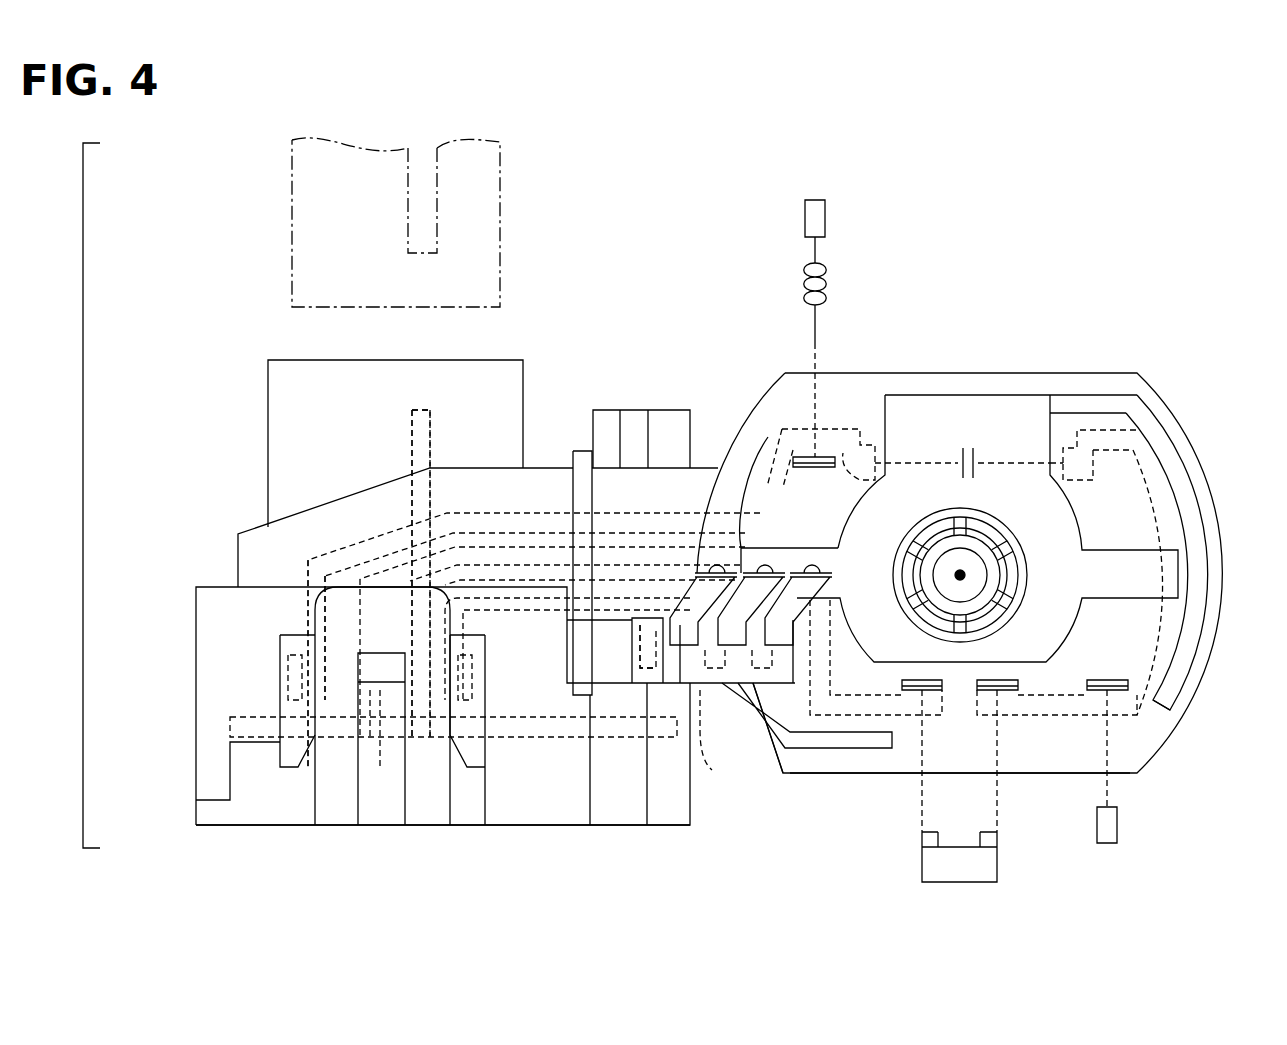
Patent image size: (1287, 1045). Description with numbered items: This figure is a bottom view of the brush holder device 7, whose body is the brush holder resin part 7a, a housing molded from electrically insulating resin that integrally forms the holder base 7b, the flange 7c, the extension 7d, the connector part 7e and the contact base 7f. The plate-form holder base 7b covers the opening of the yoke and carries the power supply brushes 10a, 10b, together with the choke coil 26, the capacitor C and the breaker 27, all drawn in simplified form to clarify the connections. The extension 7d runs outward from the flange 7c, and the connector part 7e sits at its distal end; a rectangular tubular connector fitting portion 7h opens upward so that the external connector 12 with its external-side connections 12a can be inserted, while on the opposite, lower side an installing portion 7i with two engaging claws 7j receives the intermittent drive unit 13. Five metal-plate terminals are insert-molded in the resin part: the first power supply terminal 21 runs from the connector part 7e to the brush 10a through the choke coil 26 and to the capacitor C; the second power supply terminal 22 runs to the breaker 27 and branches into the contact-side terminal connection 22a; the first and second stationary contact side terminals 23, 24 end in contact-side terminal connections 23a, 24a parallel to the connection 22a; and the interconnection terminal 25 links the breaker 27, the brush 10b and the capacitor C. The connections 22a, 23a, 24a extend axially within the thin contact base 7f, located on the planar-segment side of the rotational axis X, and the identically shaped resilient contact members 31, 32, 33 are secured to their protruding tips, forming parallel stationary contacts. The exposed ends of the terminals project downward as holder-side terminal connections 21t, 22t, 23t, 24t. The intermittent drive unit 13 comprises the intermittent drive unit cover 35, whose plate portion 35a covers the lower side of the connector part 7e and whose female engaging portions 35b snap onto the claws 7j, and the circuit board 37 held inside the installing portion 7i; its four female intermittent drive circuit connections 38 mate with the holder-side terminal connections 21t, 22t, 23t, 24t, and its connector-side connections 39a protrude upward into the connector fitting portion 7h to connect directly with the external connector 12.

The brush holder device 7 is at (1176, 337).
The brush holder resin part 7a is at (1052, 757).
The holder base 7b is at (903, 738).
The flange 7c is at (772, 760).
The extension 7d is at (665, 472).
The connector part 7e is at (244, 528).
The contact base 7f is at (715, 686).
The connector fitting portion 7h is at (310, 408).
The installing portion 7i is at (260, 750).
The engaging claws 7j is at (400, 648).
The power supply brush 10a is at (805, 222).
The power supply brush 10b is at (1117, 825).
The external connector 12 is at (500, 232).
The external-side connections 12a is at (408, 235).
The intermittent drive unit 13 is at (286, 841).
The terminal 21 is at (478, 525).
The terminal 22 is at (545, 545).
The first stationary contact side terminal 23 is at (660, 600).
The second stationary contact side terminal 24 is at (612, 610).
The holder-side terminal connection 21t is at (286, 723).
The holder-side terminal connection 22t is at (382, 746).
The holder-side terminal connection 23t is at (426, 599).
The holder-side terminal connection 24t is at (475, 723).
The contact-side terminal connection 22a is at (780, 692).
The contact-side terminal connection 23a is at (718, 740).
The contact-side terminal connection 24a is at (640, 652).
The interconnection terminal 25 is at (1190, 505).
The choke coil 26 is at (805, 290).
The breaker 27 is at (960, 882).
The contact member 31 is at (818, 590).
The contact member 32 is at (760, 572).
The contact member 33 is at (715, 568).
The intermittent drive unit cover 35 is at (500, 828).
The plate portion 35a is at (382, 828).
The female engaging portions 35b is at (383, 632).
The circuit board 37 is at (540, 740).
The intermittent drive circuit connections 38 is at (288, 690).
The connector-side connections 39a is at (412, 430).
The capacitor C is at (975, 462).
The rotational axis X is at (965, 575).